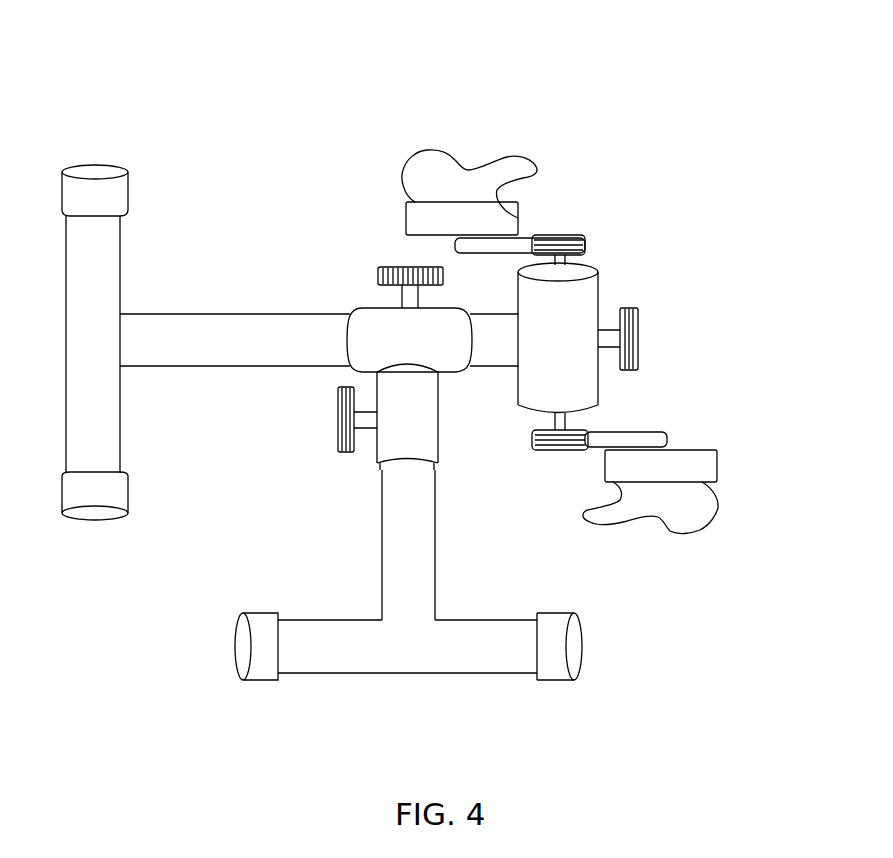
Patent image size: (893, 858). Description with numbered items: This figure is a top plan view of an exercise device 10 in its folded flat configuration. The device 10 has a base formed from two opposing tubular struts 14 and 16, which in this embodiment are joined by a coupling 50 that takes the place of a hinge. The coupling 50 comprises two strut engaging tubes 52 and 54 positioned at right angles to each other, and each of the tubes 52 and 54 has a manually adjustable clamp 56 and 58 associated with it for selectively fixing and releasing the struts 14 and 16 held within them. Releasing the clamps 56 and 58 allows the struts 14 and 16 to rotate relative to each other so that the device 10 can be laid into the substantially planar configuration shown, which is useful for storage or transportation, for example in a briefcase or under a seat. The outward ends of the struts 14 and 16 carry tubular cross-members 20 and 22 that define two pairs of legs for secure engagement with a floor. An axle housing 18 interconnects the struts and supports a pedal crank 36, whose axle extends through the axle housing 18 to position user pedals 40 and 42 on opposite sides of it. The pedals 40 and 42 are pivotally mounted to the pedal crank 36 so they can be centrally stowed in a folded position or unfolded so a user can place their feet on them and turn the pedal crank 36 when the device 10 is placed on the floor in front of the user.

The exercise device 10 is at (300, 98).
The strut 14 is at (207, 313).
The strut 16 is at (437, 587).
The axle housing 18 is at (600, 276).
The cross-member 20 is at (120, 398).
The cross-member 22 is at (412, 673).
The pedal crank 36 is at (587, 240).
The user pedal 40 is at (518, 218).
The user pedal 42 is at (702, 450).
The coupling 50 is at (365, 274).
The strut engaging tube 52 is at (372, 309).
The strut engaging tube 54 is at (440, 426).
The manually adjustable clamp 56 is at (436, 285).
The manually adjustable clamp 58 is at (340, 450).